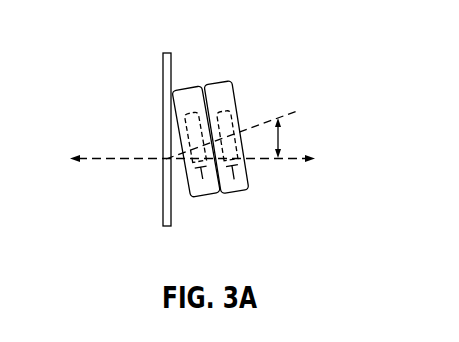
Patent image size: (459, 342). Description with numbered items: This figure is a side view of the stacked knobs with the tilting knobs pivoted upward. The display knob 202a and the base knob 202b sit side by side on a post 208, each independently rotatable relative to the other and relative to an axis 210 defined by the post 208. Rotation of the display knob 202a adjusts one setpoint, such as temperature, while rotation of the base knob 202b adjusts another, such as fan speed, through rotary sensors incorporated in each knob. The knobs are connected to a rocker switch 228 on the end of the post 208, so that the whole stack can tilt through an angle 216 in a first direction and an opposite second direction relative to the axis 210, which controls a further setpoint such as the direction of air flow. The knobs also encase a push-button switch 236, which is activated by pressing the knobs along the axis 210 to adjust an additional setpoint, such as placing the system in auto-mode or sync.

The display knob 202a is at (217, 80).
The base knob 202b is at (190, 84).
The post 208 is at (174, 161).
The axis 210 is at (89, 161).
The angle 216 is at (282, 143).
The rocker switch 228 is at (203, 179).
The push-button switch 236 is at (234, 180).